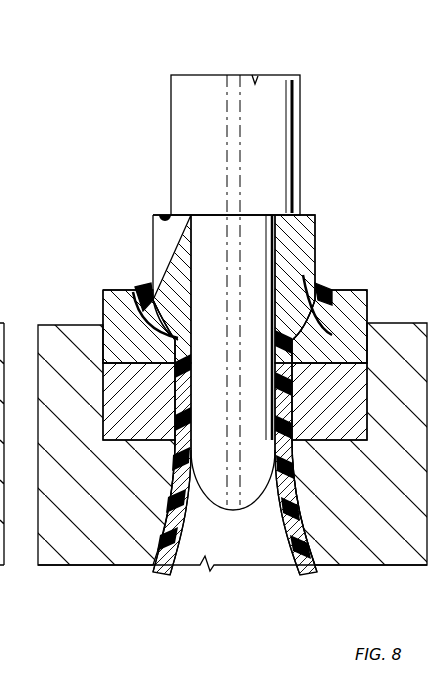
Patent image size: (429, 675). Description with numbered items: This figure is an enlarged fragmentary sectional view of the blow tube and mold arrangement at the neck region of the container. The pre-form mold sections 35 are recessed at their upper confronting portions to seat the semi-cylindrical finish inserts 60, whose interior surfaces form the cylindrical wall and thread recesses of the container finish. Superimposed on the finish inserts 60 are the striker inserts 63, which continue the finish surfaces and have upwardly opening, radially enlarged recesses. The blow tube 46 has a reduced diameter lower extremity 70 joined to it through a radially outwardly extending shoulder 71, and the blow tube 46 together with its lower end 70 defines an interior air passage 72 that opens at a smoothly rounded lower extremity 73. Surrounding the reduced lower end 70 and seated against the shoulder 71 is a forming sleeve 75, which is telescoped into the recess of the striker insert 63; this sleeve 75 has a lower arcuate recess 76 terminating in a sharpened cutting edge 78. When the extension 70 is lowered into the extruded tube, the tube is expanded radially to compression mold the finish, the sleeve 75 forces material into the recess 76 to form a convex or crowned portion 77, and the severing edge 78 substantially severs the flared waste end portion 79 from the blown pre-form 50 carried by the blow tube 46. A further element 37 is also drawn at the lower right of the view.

The pre-form mold sections 35 is at (393, 333).
The right skirt of fitting 37 is at (300, 566).
The blow tube 46 is at (305, 128).
The blown pre-form 50 is at (165, 566).
The finish inserts 60 is at (143, 420).
The striker inserts 63 is at (110, 313).
The lower extremity 70 is at (200, 246).
The shoulder 71 is at (166, 214).
The interior air passage 72 is at (300, 236).
The lower extremity 73 is at (244, 500).
The forming sleeve 75 is at (302, 262).
The lower arcuate recess 76 is at (314, 280).
The convex portion 77 is at (133, 290).
The cutting edge 78 is at (160, 352).
The waste end portion 79 is at (140, 287).